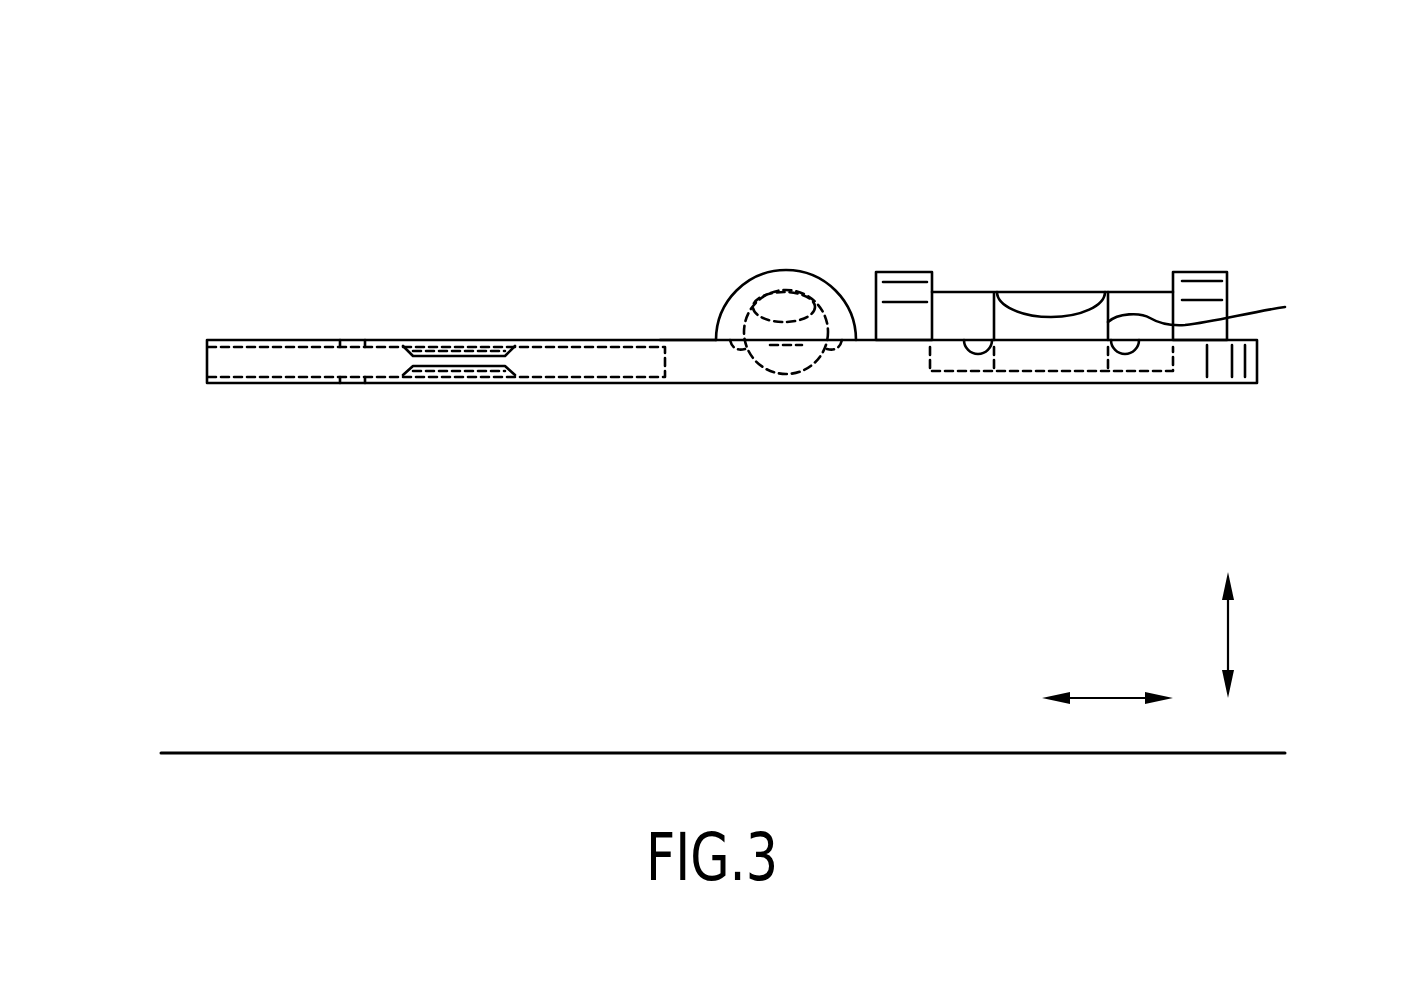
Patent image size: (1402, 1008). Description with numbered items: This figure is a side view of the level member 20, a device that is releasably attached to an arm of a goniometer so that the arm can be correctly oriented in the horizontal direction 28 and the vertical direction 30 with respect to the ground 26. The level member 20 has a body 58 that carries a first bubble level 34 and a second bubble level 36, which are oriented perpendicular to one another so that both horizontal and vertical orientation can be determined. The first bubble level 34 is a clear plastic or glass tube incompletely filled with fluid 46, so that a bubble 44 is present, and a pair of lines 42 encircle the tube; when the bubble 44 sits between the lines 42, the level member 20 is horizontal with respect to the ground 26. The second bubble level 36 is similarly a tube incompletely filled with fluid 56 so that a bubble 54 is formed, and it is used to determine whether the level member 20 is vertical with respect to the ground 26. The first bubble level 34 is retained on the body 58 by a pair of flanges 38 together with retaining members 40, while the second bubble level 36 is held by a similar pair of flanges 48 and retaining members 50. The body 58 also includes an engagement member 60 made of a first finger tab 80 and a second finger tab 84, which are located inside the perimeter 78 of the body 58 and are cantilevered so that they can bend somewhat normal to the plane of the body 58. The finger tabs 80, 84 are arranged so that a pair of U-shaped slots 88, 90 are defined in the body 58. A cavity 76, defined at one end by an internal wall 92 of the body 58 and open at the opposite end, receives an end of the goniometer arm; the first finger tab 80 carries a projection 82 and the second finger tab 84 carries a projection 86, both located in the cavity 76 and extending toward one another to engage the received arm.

The level member 20 is at (1168, 168).
The ground 26 is at (217, 752).
The horizontal direction 28 is at (1110, 698).
The vertical direction 30 is at (1228, 636).
The first bubble level 34 is at (1148, 291).
The second bubble level 36 is at (768, 375).
The flanges 38 is at (905, 272).
The retaining members 40 is at (978, 352).
The lines 42 is at (992, 312).
The bubble 44 is at (1048, 307).
The fluid 46 is at (1127, 307).
The flanges 48 is at (760, 273).
The retaining members 50 is at (738, 352).
The bubble 54 is at (792, 305).
The fluid 56 is at (795, 357).
The body 58 is at (692, 340).
The engagement member 60 is at (380, 405).
The cavity 76 is at (222, 362).
The perimeter 78 is at (1270, 362).
The first finger tab 80 is at (407, 341).
The projection 82 is at (480, 350).
The second finger tab 84 is at (409, 383).
The projection 86 is at (477, 373).
The U-shaped slot 88 is at (353, 341).
The U-shaped slot 90 is at (348, 383).
The internal wall 92 is at (664, 365).